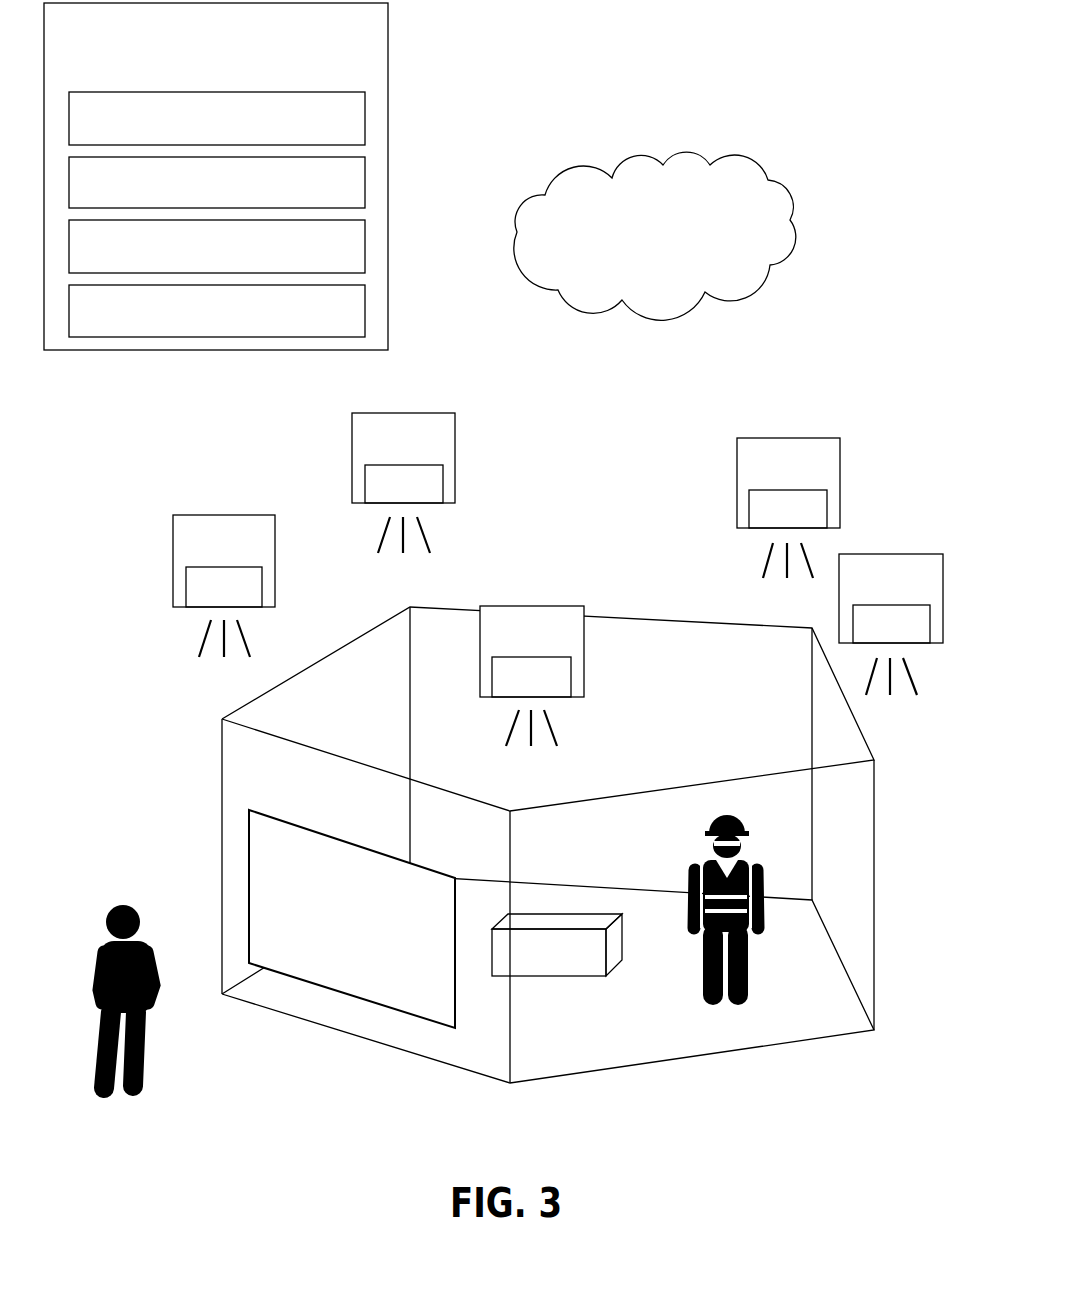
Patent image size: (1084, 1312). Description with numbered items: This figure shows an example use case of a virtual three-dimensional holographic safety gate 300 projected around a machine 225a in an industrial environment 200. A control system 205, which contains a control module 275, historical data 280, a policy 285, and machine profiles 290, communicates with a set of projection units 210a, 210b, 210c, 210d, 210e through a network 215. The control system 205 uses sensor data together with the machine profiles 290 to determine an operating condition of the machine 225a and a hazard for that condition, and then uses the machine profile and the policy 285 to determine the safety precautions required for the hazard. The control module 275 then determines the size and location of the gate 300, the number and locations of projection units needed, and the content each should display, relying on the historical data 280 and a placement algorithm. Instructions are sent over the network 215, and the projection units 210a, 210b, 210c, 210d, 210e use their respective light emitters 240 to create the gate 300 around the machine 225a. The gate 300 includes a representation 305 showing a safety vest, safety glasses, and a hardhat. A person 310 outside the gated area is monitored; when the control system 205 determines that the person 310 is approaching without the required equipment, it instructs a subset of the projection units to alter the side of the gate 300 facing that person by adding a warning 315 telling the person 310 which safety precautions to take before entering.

The environment 200 is at (880, 119).
The control system 205 is at (236, 77).
The control module 275 is at (318, 132).
The historical data 280 is at (313, 196).
The policy 285 is at (270, 261).
The machine profiles 290 is at (325, 324).
The network 215 is at (669, 259).
The projection unit 210a is at (249, 561).
The projection unit 210b is at (428, 459).
The projection unit 210c is at (557, 652).
The projection unit 210d is at (813, 484).
The projection unit 210e is at (916, 601).
The light emitter 240 is at (242, 599).
The virtual three-dimensional holographic safety gate 300 is at (641, 608).
The representation 305 is at (758, 847).
The person 310 is at (86, 922).
The warning 315 is at (403, 1008).
The machine 225a is at (575, 967).